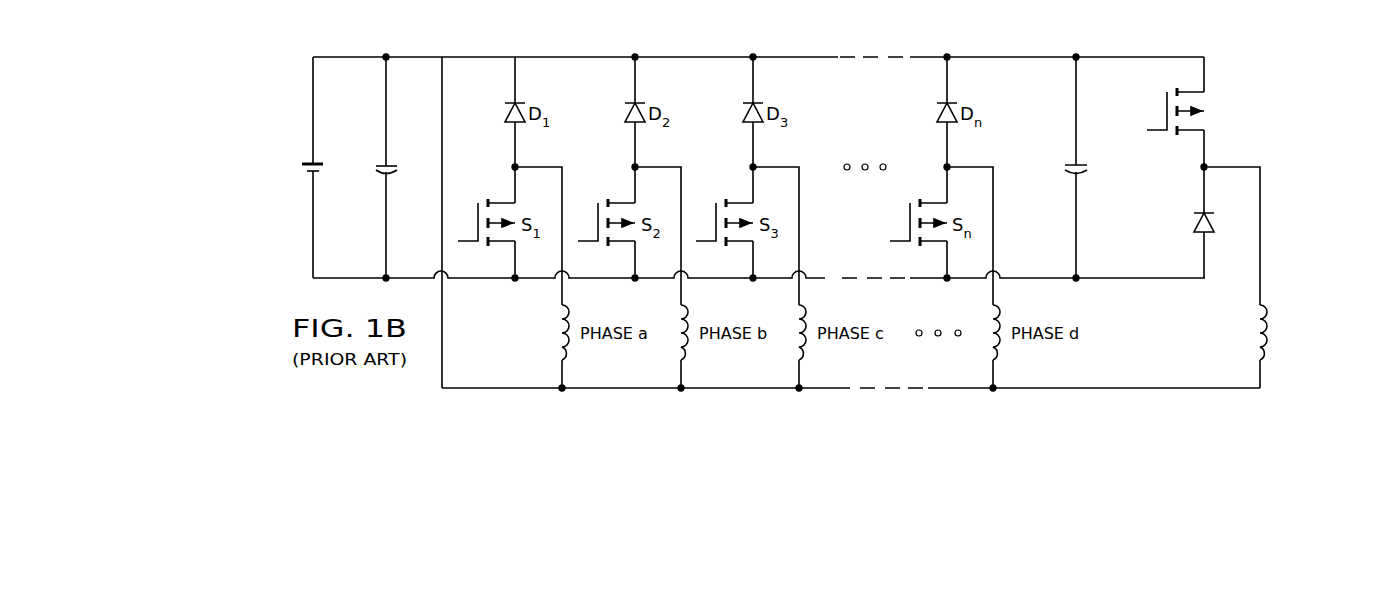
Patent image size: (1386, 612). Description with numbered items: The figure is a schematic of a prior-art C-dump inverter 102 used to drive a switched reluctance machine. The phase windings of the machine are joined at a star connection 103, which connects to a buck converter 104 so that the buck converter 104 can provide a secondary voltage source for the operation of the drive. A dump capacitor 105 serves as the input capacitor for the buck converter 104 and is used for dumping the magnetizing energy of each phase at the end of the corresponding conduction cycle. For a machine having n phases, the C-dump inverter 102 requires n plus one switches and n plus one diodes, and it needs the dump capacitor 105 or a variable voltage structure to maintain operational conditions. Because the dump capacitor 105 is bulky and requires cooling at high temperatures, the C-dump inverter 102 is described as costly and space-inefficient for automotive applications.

The C-dump inverter 102 is at (284, 103).
The star connection 103 is at (511, 387).
The buck converter 104 is at (1113, 148).
The dump capacitor 105 is at (1066, 165).